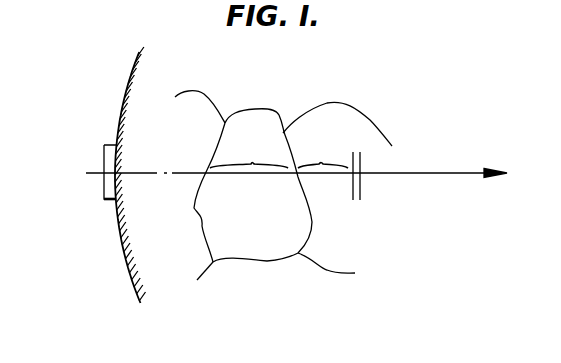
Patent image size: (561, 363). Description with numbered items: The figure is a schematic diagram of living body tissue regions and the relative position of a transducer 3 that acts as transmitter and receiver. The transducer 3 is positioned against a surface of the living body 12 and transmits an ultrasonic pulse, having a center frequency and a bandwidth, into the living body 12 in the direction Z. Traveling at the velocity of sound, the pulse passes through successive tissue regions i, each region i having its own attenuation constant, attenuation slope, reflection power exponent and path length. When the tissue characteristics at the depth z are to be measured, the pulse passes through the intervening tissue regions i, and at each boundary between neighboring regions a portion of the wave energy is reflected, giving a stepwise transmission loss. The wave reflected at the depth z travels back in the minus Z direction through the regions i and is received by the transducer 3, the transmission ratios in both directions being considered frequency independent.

The living body 12 is at (122, 105).
The transducer 3 is at (104, 200).
The direction Z is at (304, 179).
The depth z is at (356, 184).
The tissue region i is at (279, 168).